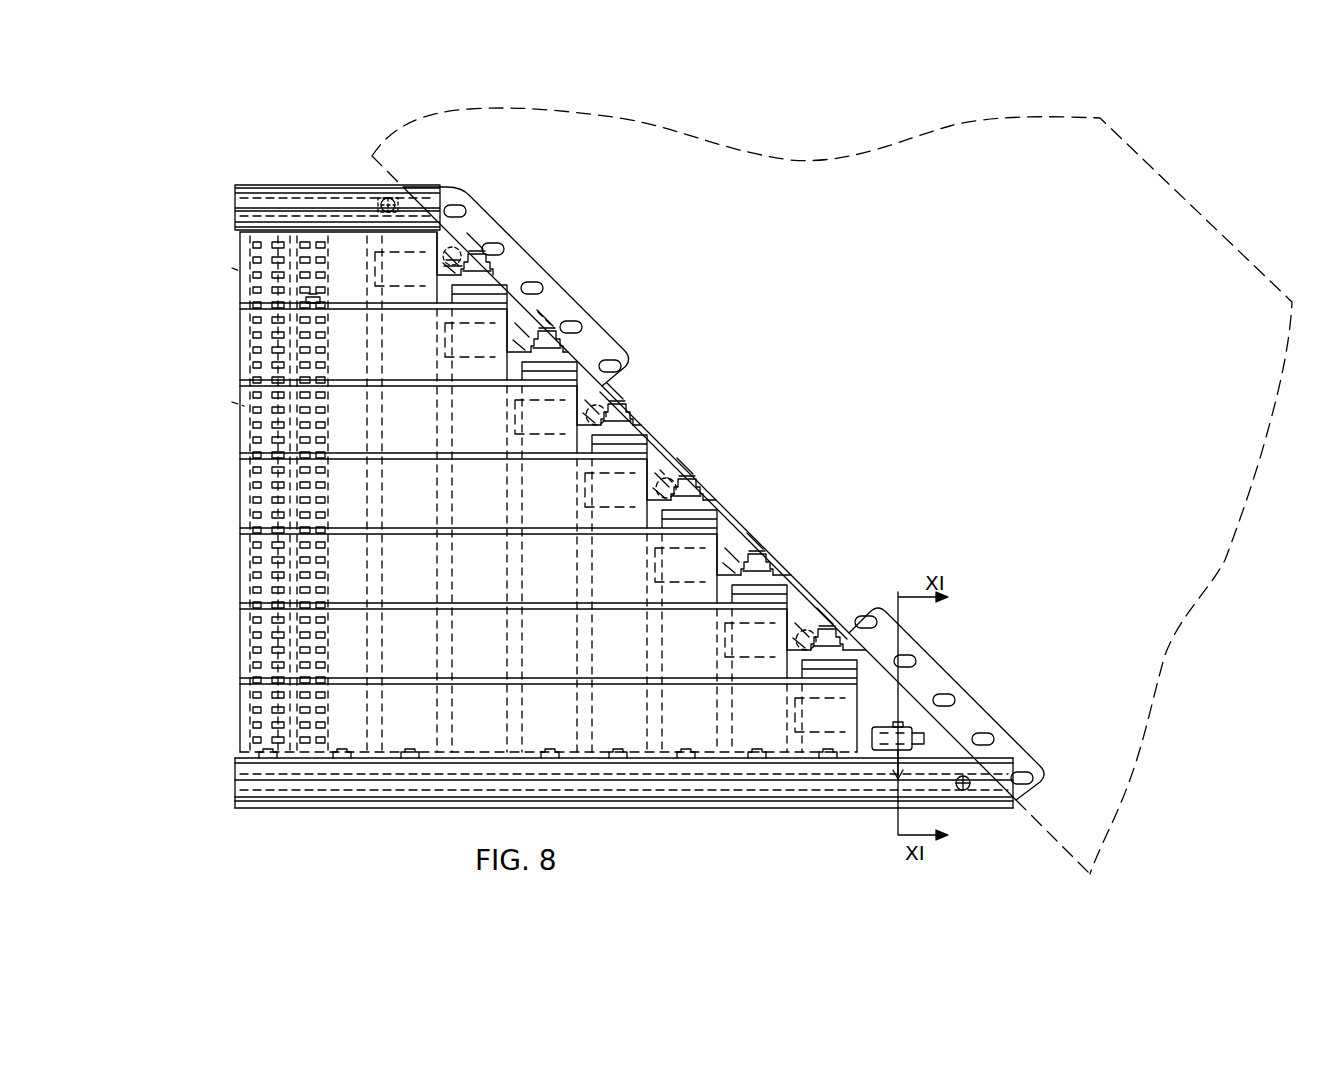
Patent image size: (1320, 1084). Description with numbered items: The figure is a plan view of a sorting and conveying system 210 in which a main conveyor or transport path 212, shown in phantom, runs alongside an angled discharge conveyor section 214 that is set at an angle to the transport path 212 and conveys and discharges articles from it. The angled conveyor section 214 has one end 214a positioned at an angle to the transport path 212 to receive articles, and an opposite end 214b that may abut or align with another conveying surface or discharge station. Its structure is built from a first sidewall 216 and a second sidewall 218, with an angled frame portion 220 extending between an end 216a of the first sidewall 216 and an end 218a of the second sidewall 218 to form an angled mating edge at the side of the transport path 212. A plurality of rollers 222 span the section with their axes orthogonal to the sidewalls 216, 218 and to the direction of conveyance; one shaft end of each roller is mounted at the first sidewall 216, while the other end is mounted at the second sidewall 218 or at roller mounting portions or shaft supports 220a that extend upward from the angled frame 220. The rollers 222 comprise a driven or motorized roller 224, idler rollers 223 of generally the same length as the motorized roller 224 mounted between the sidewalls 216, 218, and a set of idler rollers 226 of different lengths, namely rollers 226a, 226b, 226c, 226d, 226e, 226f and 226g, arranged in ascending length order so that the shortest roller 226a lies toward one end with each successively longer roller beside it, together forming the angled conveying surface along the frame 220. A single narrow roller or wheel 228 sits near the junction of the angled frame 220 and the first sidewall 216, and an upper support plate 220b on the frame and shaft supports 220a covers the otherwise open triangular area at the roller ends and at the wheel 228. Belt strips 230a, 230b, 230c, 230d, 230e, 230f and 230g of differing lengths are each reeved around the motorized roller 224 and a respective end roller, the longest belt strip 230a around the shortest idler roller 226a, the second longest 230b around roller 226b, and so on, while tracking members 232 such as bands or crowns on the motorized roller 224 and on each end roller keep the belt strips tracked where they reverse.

The sorting and/or conveying system 210 is at (230, 140).
The main conveyor or transport path 212 is at (965, 340).
The angled discharge conveyor section 214 is at (333, 840).
The end of angled conveyor section 214a is at (970, 820).
The opposite end of angled conveyor section 214b is at (238, 816).
The first sidewall 216 is at (642, 806).
The end of first sidewall 216a is at (997, 810).
The second sidewall 218 is at (316, 186).
The end of second sidewall 218a is at (409, 190).
The angled frame portion 220 is at (652, 422).
The roller mounting portions or shaft supports 220a is at (614, 417).
The upper support plate or support surface 220b is at (512, 287).
The rollers 222 is at (226, 474).
The idler rollers 223 is at (358, 756).
The driven roller or motorized roller 224 is at (248, 605).
The idler rollers 226 is at (315, 305).
The shortest idler roller 226a is at (848, 672).
The next shortest idler roller 226b is at (778, 600).
The idler roller 226c is at (712, 520).
The idler roller 226d is at (640, 440).
The idler roller 226e is at (550, 360).
The idler roller 226f is at (514, 286).
The idler roller 226g is at (458, 262).
The narrow roller or wheel 228 is at (940, 737).
The longest belt strip 230a is at (566, 722).
The second longest belt strip 230b is at (500, 654).
The belt strip 230c is at (566, 584).
The belt strip 230d is at (498, 509).
The belt strip 230e is at (424, 434).
The belt strip 230f is at (420, 357).
The belt strip 230g is at (370, 289).
The tracking members 232 is at (242, 272).